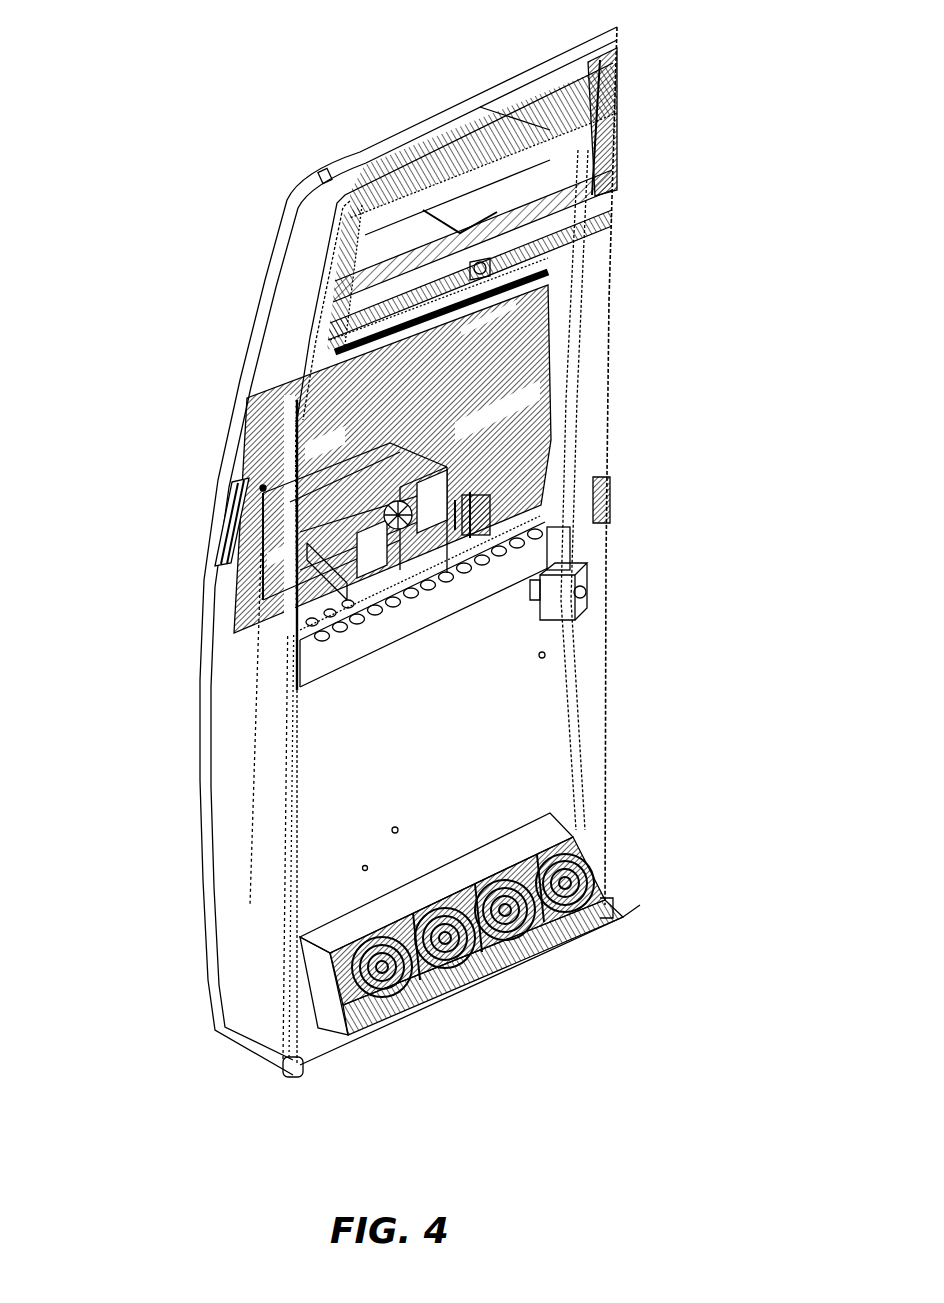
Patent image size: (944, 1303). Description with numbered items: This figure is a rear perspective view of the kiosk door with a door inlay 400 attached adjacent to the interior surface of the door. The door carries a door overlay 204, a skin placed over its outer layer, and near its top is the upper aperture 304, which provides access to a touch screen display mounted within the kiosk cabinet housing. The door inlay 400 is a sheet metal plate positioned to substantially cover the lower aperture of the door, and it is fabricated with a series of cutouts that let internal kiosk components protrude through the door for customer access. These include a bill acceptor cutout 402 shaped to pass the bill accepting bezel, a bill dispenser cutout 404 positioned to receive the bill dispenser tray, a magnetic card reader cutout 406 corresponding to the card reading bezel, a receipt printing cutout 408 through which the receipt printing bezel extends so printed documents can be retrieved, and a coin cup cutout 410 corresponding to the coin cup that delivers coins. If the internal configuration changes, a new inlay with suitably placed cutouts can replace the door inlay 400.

The door overlay 204 is at (357, 153).
The upper aperture 304 is at (590, 140).
The door inlay 400 is at (453, 387).
The bill acceptor cutout 402 is at (280, 470).
The bill dispenser cutout 404 is at (270, 555).
The magnetic card reader cutout 406 is at (500, 303).
The receipt printing cutout 408 is at (518, 395).
The coin cup cutout 410 is at (483, 520).